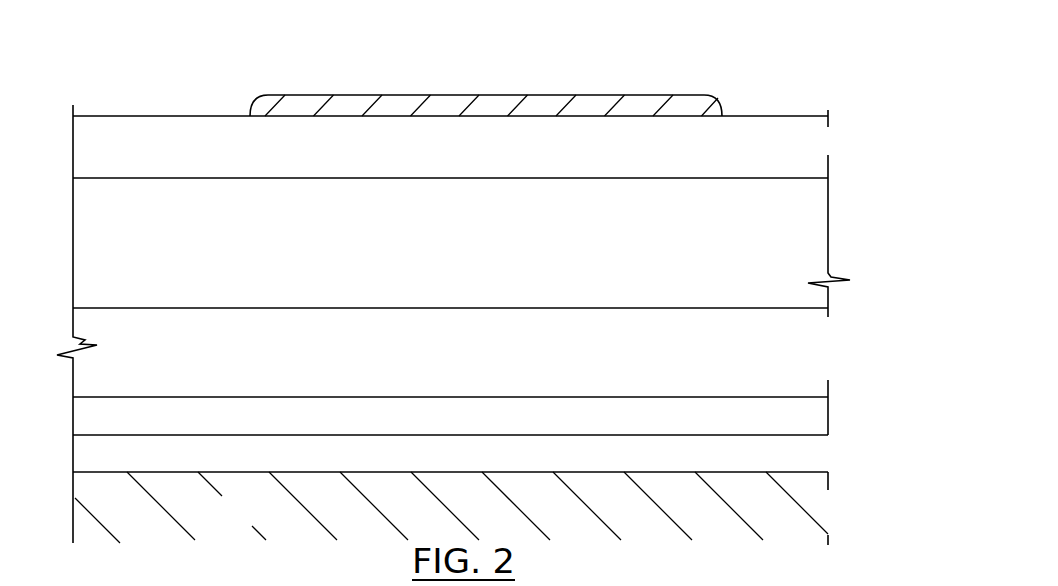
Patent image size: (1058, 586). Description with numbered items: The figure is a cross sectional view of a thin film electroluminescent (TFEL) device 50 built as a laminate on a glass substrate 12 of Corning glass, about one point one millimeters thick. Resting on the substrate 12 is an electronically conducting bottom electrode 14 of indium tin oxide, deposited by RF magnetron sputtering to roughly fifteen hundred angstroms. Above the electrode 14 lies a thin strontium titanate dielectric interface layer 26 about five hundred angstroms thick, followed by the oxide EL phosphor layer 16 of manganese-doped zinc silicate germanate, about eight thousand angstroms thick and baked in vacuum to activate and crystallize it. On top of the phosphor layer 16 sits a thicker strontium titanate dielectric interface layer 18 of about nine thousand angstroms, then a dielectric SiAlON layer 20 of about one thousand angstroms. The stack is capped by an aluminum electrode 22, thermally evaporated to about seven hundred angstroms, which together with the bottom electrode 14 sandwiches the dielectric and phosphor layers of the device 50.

The glass substrate 12 is at (254, 524).
The bottom electrode 14 is at (269, 468).
The EL phosphor layer 16 is at (269, 368).
The dielectric interface layer 18 is at (272, 252).
The SiAlON layer 20 is at (272, 158).
The aluminum electrode 22 is at (503, 101).
The dielectric interface layer 26 is at (269, 428).
The TFEL device 50 is at (742, 68).